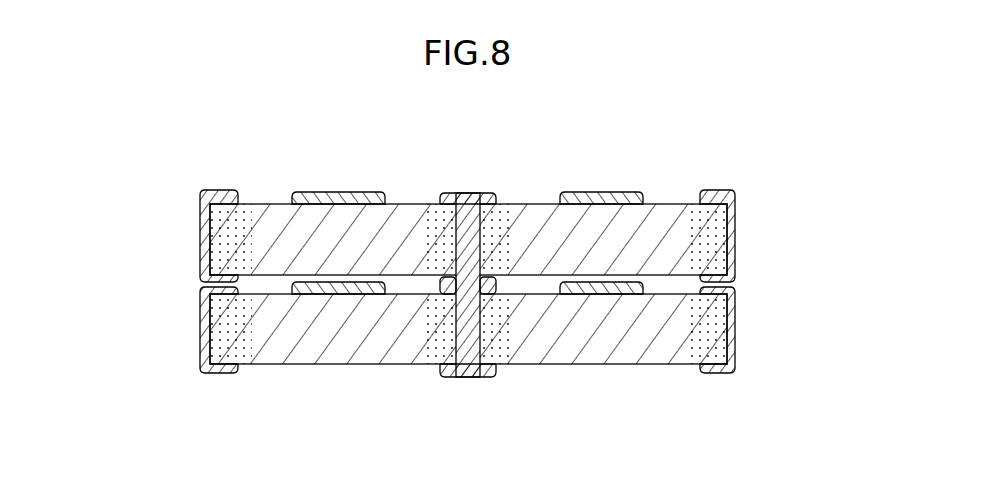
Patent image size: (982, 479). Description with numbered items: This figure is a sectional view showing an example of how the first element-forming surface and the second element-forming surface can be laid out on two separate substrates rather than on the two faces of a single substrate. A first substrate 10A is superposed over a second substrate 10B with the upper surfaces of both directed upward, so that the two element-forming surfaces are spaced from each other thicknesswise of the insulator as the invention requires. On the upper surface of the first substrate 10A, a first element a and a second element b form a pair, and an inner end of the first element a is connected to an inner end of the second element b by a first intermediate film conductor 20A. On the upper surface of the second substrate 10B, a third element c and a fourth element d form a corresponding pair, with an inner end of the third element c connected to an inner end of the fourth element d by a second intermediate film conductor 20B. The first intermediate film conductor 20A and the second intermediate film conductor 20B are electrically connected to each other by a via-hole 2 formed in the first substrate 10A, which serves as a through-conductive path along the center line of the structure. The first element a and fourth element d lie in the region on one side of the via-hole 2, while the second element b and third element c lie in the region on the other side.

The first element a is at (335, 191).
The second element b is at (598, 192).
The third element c is at (610, 290).
The fourth element d is at (334, 294).
The first substrate 10A is at (402, 214).
The second substrate 10B is at (389, 340).
The via-hole 2 is at (466, 328).
The first intermediate film conductor 20A is at (474, 194).
The second intermediate film conductor 20B is at (492, 294).